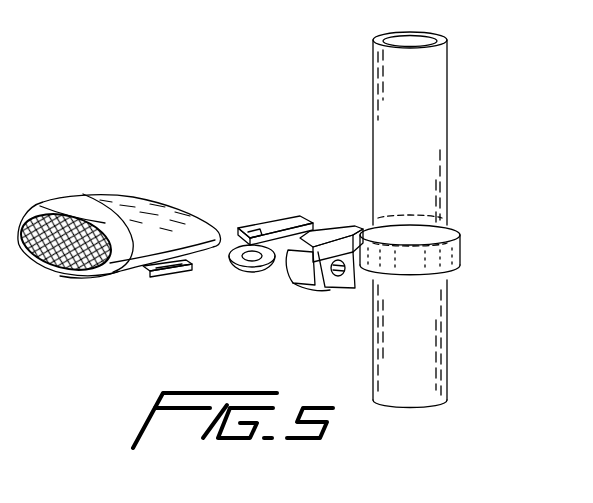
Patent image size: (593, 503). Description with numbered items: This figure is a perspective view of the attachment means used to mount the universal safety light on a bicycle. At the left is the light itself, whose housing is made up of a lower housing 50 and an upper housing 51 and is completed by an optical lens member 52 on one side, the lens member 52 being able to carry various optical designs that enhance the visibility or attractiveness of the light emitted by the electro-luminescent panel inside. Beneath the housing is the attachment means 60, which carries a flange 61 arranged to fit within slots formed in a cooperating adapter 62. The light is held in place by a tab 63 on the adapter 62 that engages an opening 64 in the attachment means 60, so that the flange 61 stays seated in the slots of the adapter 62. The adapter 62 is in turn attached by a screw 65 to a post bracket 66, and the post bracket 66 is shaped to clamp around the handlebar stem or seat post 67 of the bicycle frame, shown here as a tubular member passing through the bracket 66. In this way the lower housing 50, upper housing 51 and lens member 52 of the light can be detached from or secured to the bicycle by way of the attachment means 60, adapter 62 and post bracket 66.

The lower housing 50 is at (98, 277).
The upper housing 51 is at (160, 216).
The optical lens member 52 is at (62, 218).
The attachment means 60 is at (158, 278).
The flange 61 is at (190, 268).
The adapter 62 is at (320, 232).
The tab 63 is at (253, 257).
The opening 64 is at (130, 277).
The screw 65 is at (336, 276).
The post bracket 66 is at (415, 252).
The handlebar stem or seat post 67 is at (388, 88).